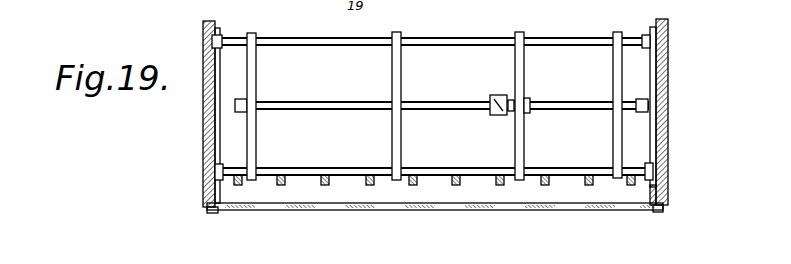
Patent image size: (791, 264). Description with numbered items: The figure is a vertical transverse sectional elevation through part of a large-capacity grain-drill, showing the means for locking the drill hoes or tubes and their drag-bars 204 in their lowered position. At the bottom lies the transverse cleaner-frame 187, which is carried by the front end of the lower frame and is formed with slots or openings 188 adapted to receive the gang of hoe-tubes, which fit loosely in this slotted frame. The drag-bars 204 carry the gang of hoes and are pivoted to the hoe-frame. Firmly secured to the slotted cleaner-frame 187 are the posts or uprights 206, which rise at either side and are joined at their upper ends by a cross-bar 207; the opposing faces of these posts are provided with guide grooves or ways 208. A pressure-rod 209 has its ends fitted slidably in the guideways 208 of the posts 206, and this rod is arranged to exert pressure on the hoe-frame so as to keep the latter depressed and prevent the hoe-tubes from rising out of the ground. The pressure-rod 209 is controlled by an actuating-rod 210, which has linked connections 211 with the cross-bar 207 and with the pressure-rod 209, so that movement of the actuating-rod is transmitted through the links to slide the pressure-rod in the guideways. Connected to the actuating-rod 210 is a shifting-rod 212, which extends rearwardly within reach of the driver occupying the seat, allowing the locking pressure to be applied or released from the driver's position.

The cleaner-frame 187 is at (480, 211).
The slots or openings 188 is at (548, 211).
The drag-bars 204 is at (325, 176).
The posts or uprights 206 is at (208, 22).
The cross-bar 207 is at (477, 30).
The guide grooves or ways 208 is at (207, 104).
The pressure-rod 209 is at (447, 161).
The actuating-rod 210 is at (446, 96).
The linked connections 211 is at (392, 70).
The shifting-rod 212 is at (494, 117).